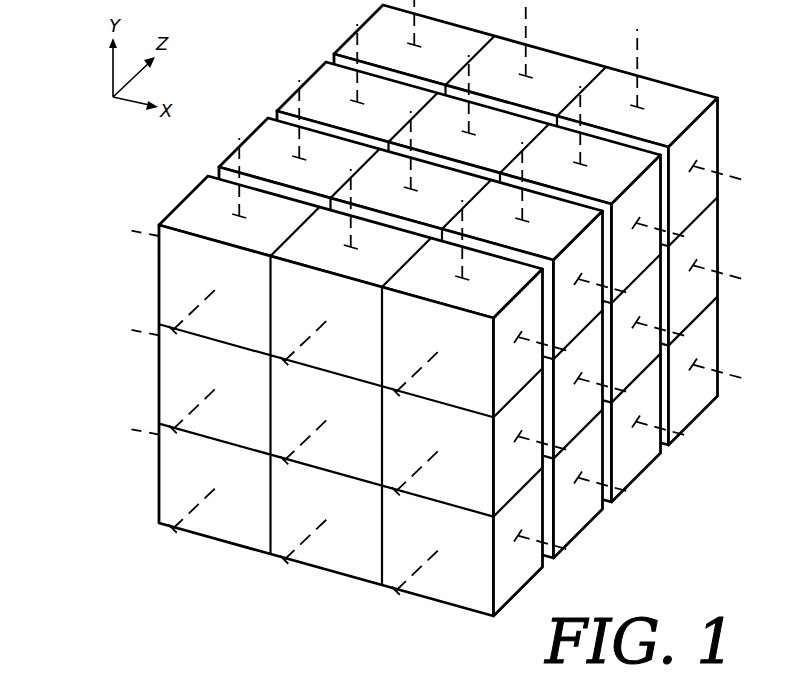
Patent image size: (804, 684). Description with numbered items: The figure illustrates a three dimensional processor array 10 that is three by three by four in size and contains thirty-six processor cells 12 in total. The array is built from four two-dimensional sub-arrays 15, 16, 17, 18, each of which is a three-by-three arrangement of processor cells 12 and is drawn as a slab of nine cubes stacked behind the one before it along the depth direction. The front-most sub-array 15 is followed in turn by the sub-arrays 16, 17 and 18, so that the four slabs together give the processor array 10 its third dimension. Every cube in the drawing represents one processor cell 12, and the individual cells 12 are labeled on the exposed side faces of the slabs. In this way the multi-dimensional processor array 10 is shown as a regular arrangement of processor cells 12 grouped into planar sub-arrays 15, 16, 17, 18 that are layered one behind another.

The three dimensional processor array 10 is at (395, 308).
The processor cell 12 is at (699, 405).
The two dimensional 3×3 sub-array 15 is at (185, 198).
The two dimensional 3×3 sub-array 16 is at (252, 128).
The two dimensional 3×3 sub-array 17 is at (304, 73).
The two dimensional 3×3 sub-array 18 is at (350, 36).